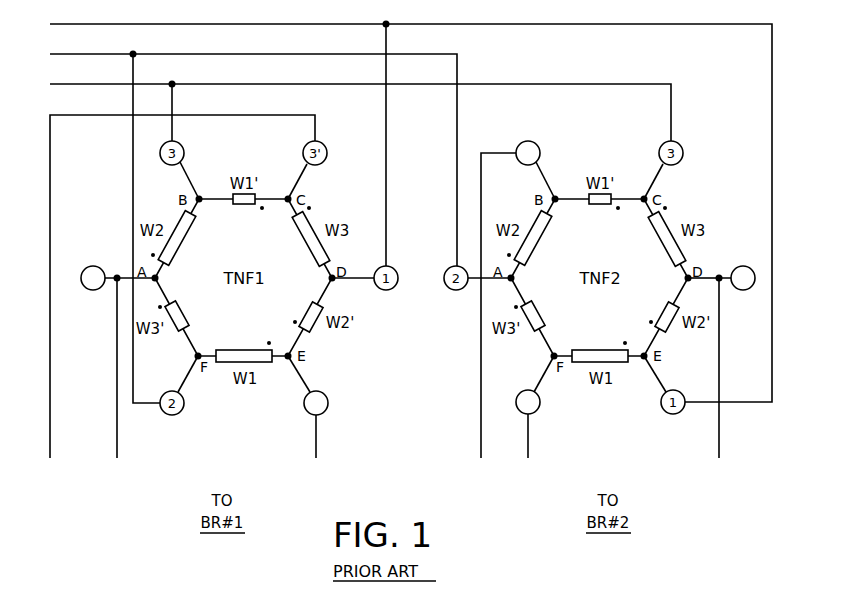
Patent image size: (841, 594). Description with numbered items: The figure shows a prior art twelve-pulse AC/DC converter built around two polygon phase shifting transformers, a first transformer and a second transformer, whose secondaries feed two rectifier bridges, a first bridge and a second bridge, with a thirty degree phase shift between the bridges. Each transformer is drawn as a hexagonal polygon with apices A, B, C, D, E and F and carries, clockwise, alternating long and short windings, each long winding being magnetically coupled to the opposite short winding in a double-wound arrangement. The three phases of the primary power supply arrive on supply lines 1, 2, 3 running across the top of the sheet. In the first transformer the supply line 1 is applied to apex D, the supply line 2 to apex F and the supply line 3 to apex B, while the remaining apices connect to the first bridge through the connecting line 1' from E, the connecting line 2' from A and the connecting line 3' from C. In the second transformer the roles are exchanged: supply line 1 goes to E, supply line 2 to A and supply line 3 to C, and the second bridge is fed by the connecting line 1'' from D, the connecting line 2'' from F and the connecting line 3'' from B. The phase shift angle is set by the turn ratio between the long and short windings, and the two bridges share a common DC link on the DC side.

The supply line 1 is at (405, 208).
The supply line 2 is at (247, 224).
The supply line 3 is at (354, 108).
The connecting line to bridge BR#1 1' is at (316, 439).
The connecting line to bridge BR#1 2' is at (102, 377).
The connecting line to bridge BR#1 3' is at (179, 301).
The connecting line to bridge BR#2 1'' is at (732, 377).
The connecting line to bridge BR#2 2'' is at (528, 439).
The connecting line to bridge BR#2 3'' is at (506, 314).